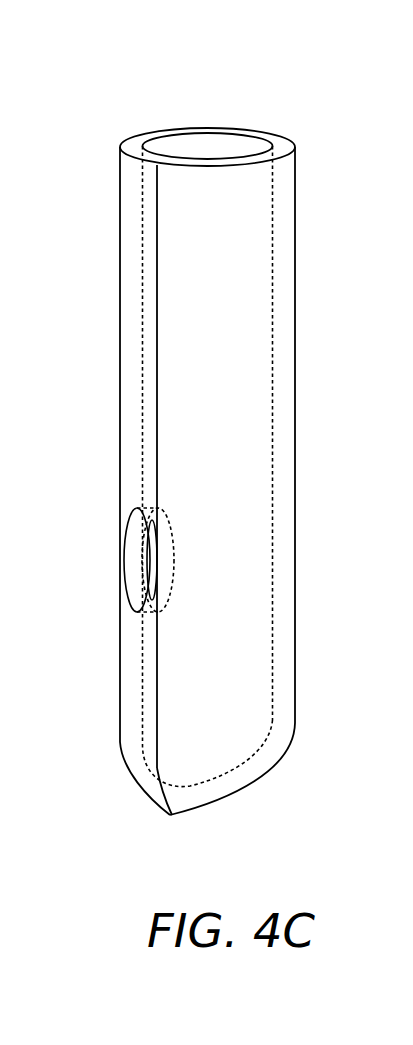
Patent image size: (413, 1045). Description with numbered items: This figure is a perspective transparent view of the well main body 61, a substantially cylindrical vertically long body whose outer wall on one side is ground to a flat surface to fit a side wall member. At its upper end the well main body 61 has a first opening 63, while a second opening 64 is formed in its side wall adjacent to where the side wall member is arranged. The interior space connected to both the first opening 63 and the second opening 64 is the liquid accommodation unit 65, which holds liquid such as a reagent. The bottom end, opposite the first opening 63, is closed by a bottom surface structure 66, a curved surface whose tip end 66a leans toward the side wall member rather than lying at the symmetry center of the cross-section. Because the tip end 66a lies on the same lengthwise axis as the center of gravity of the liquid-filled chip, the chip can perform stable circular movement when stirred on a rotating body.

The well main body 61 is at (220, 467).
The first opening 63 is at (195, 140).
The second opening 64 is at (138, 558).
The liquid accommodation unit 65 is at (257, 357).
The bottom surface structure 66 is at (250, 787).
The tip end 66a is at (172, 815).